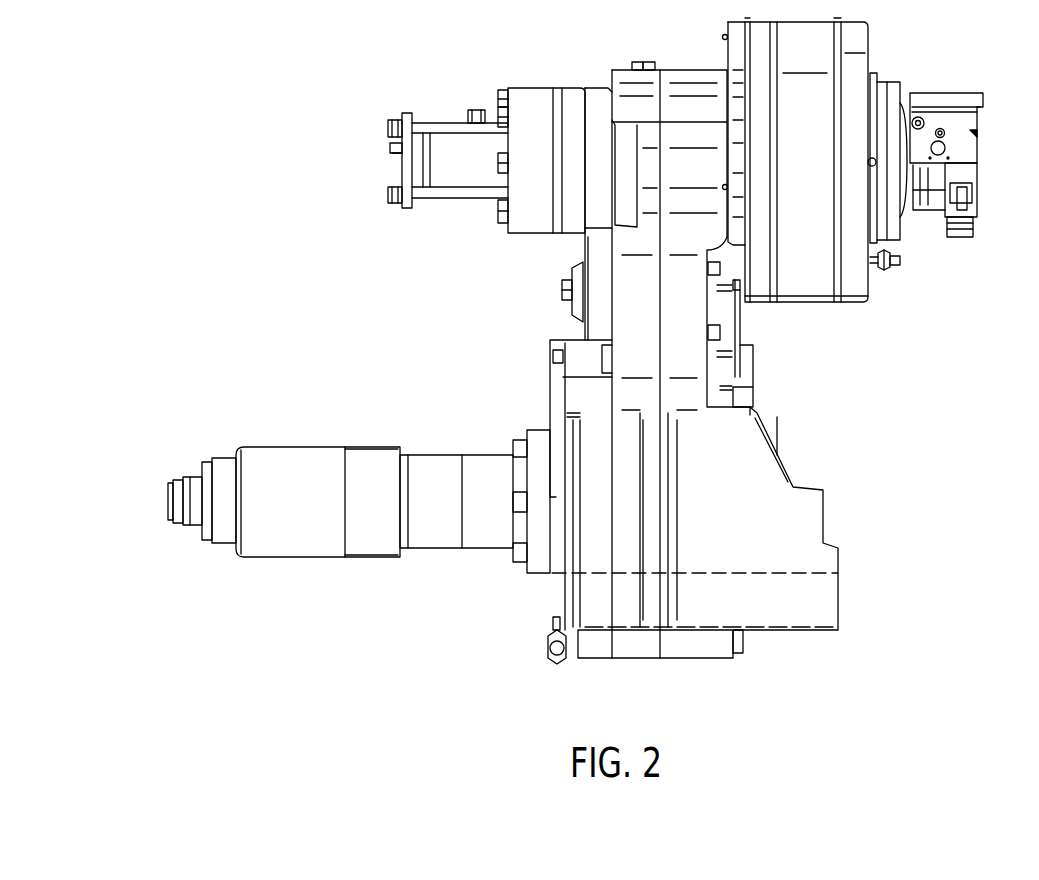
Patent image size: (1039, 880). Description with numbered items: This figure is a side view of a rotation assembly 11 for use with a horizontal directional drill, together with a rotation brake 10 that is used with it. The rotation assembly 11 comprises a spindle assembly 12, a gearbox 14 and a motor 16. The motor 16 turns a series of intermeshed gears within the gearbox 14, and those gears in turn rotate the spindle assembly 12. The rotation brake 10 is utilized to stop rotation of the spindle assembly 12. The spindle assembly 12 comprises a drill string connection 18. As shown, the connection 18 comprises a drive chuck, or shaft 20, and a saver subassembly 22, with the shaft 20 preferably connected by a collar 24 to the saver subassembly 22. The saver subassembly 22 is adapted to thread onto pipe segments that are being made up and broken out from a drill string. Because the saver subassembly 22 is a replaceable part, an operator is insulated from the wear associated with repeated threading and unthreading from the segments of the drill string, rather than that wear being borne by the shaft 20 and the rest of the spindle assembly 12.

The rotation brake 10 is at (500, 139).
The rotation assembly 11 is at (193, 106).
The spindle assembly 12 is at (620, 363).
The gearbox 14 is at (815, 197).
The motor 16 is at (961, 142).
The drill string connection 18 is at (317, 532).
The shaft 20 is at (464, 484).
The saver subassembly 22 is at (182, 480).
The collar 24 is at (322, 472).